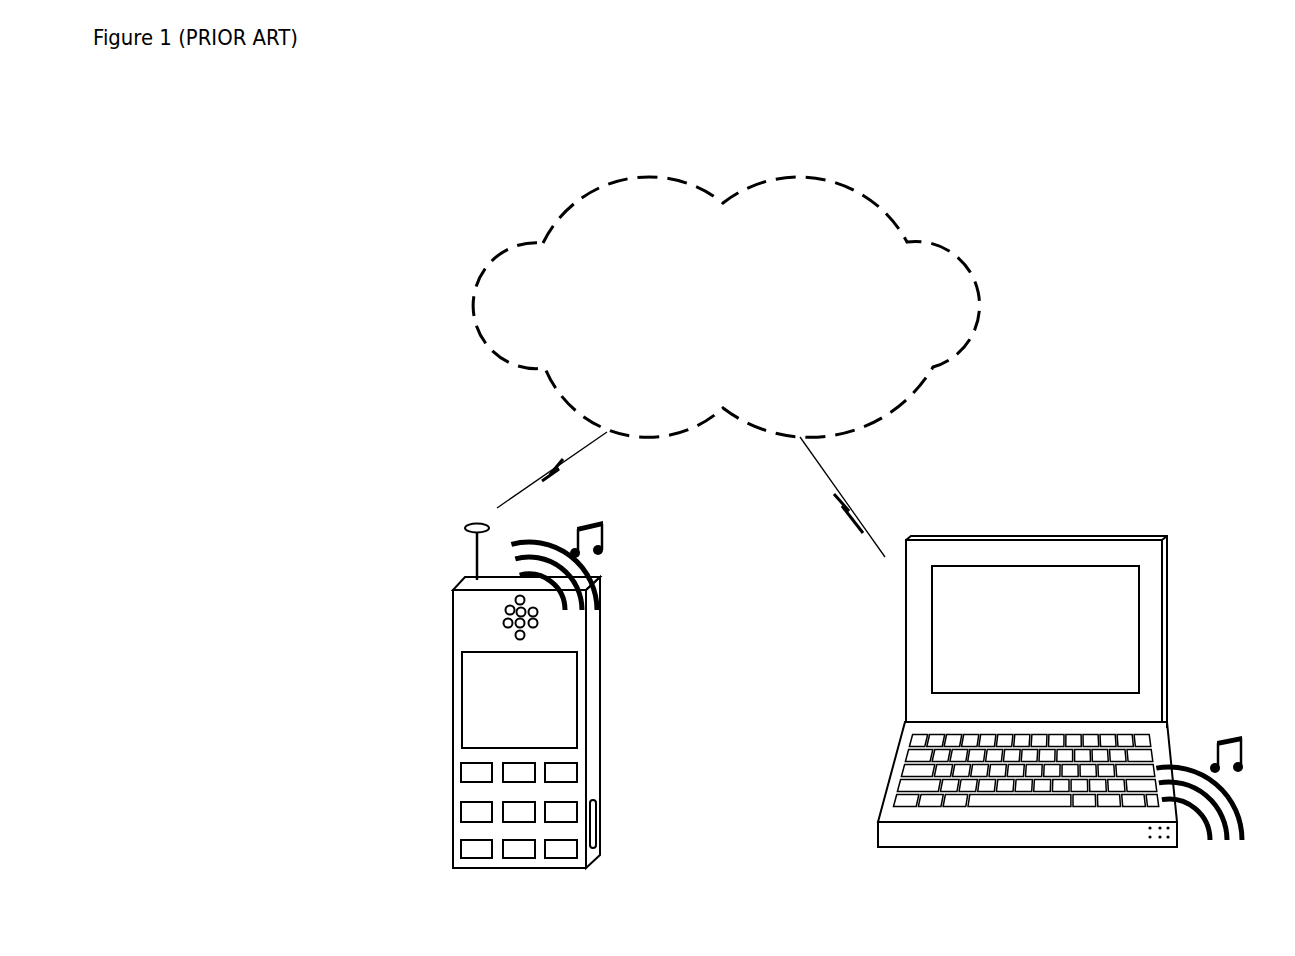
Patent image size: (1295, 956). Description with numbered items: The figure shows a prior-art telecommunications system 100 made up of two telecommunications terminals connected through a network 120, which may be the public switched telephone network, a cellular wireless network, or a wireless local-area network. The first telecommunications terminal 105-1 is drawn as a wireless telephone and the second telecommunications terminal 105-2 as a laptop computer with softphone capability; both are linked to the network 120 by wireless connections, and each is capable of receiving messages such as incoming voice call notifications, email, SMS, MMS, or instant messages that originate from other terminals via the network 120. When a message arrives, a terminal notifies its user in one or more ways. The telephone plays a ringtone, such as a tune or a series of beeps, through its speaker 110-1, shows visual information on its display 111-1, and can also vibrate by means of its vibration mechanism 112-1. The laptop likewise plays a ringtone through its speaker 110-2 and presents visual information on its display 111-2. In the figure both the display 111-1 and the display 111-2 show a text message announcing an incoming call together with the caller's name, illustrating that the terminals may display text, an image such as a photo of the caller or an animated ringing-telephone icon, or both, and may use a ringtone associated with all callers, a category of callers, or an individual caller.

The telecommunications system 100 is at (922, 133).
The network 120 is at (760, 307).
The telecommunications terminal 105-1 is at (529, 715).
The speaker 110-1 is at (443, 629).
The display 111-1 is at (572, 700).
The vibration mechanism 112-1 is at (650, 829).
The telecommunications terminal 105-2 is at (1042, 713).
The speaker 110-2 is at (1212, 856).
The display 111-2 is at (973, 629).